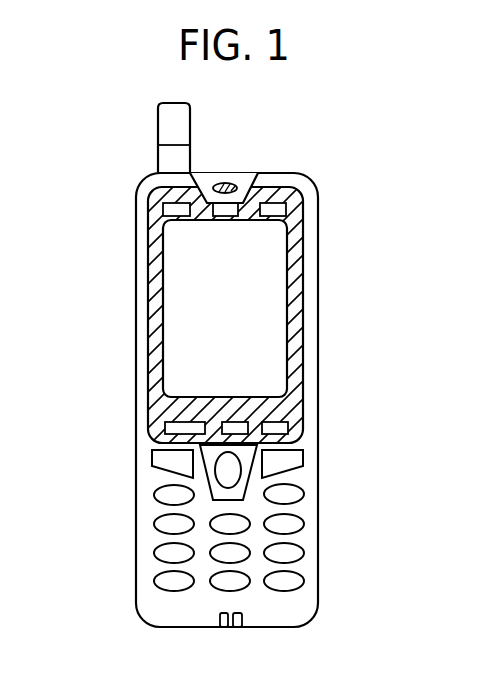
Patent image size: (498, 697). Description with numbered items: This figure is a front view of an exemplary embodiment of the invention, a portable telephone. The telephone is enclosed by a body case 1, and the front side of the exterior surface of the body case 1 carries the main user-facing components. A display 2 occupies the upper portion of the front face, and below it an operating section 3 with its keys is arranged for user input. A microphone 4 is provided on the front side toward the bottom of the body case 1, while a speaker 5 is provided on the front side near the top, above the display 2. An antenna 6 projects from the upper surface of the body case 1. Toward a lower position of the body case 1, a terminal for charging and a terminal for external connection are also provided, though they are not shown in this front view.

The body case 1 is at (317, 200).
The display 2 is at (250, 298).
The operating section 3 is at (255, 513).
The microphone 4 is at (243, 625).
The speaker 5 is at (231, 179).
The antenna 6 is at (165, 123).